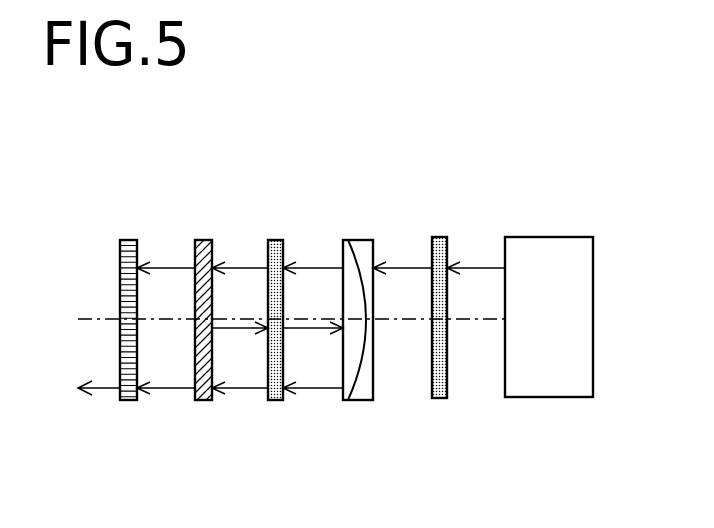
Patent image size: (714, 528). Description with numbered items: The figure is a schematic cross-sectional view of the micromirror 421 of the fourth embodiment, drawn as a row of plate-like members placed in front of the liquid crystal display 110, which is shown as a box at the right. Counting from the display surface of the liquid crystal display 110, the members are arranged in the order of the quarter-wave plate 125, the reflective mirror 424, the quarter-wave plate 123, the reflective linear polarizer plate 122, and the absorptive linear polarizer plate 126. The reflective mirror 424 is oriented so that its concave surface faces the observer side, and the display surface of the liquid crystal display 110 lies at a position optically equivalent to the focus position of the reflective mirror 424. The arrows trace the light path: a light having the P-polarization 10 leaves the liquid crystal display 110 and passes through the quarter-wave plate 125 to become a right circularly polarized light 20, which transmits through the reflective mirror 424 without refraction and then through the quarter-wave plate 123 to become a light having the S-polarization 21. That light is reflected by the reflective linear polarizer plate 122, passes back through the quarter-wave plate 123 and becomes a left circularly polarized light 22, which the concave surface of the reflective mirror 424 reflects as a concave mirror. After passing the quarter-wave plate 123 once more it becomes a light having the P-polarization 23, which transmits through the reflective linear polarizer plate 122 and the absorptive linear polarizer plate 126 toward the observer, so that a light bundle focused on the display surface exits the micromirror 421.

The micromirror 421 is at (460, 167).
The light having the P-polarization 10 is at (485, 268).
The right circularly polarized light 20 is at (326, 268).
The light having the S-polarization 21 is at (239, 322).
The left circularly polarized light 22 is at (318, 322).
The light having the P-polarization 23 is at (103, 390).
The liquid crystal display 110 is at (548, 398).
The reflective linear polarizer plate 122 is at (208, 401).
The quarter-wave plate 123 is at (280, 401).
The quarter-wave plate 125 is at (443, 399).
The absorptive linear polarizer plate 126 is at (138, 401).
The reflective mirror 424 is at (368, 401).